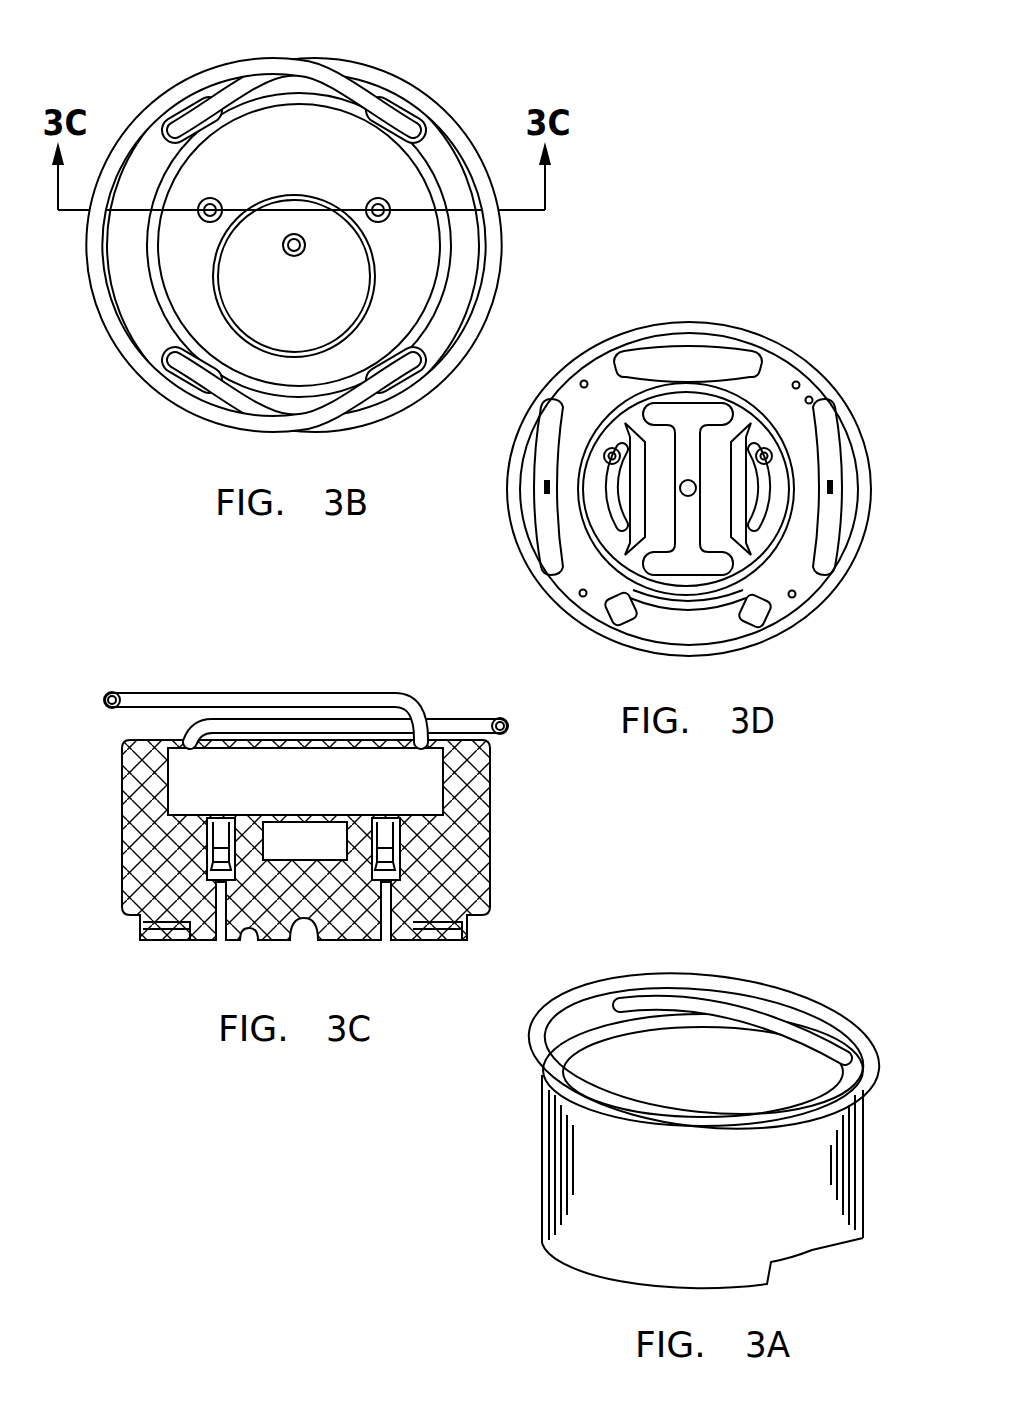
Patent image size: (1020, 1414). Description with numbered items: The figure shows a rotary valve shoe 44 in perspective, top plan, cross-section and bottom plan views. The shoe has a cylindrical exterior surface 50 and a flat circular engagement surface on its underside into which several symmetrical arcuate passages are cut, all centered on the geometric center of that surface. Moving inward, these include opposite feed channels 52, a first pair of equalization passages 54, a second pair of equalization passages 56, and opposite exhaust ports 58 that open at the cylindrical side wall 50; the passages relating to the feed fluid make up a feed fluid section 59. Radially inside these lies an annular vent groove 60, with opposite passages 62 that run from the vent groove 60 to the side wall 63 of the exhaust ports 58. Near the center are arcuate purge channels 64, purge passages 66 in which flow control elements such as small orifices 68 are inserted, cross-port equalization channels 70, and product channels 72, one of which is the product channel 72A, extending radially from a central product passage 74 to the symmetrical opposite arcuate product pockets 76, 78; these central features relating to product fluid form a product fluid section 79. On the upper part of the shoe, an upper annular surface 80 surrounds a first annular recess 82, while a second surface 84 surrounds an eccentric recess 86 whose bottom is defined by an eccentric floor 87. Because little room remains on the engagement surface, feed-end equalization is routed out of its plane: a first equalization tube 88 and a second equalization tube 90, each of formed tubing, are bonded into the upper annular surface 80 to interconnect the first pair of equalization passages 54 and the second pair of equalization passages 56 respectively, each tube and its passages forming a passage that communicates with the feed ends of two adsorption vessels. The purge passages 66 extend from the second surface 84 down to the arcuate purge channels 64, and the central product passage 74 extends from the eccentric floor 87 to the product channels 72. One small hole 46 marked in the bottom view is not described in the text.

In FIG. 3B, the rotary valve shoe 44 is at (138, 84).
In FIG. 3D, the rotary valve shoe 44 is at (823, 300).
In FIG. 3C, the rotary valve shoe 44 is at (186, 666).
In FIG. 3A, the rotary valve shoe 44 is at (800, 957).
In FIG. 3D, the vent hole 46 is at (813, 398).
In FIG. 3D, the cylindrical exterior surface 50 is at (672, 330).
In FIG. 3C, the cylindrical exterior surface 50 is at (492, 797).
In FIG. 3A, the cylindrical exterior surface 50 is at (542, 1160).
In FIG. 3D, the feed channels 52 is at (690, 336).
In FIG. 3D, the first pair of equalization passages 54 is at (799, 382).
In FIG. 3D, the second pair of equalization passages 56 is at (582, 381).
In FIG. 3D, the exhaust ports 58 is at (527, 512).
In FIG. 3C, the exhaust ports 58 is at (480, 921).
In FIG. 3A, the exhaust ports 58 is at (805, 1262).
In FIG. 3D, the feed fluid section 59 is at (773, 587).
In FIG. 3D, the annular vent groove 60 is at (552, 540).
In FIG. 3C, the annular vent groove 60 is at (416, 943).
In FIG. 3D, the passages 62 is at (578, 490).
In FIG. 3C, the passages 62 is at (432, 938).
In FIG. 3D, the side wall 63 is at (545, 482).
In FIG. 3C, the side wall 63 is at (457, 929).
In FIG. 3D, the arcuate purge channels 64 is at (832, 510).
In FIG. 3C, the arcuate purge channels 64 is at (215, 933).
In FIG. 3B, the purge passages 66 is at (220, 205).
In FIG. 3C, the purge passages 66 is at (392, 838).
In FIG. 3B, the small orifices 68 is at (210, 198).
In FIG. 3D, the small orifices 68 is at (772, 457).
In FIG. 3C, the small orifices 68 is at (383, 818).
In FIG. 3D, the cross-port equalization channels 70 is at (627, 598).
In FIG. 3C, the cross-port equalization channels 70 is at (252, 933).
In FIG. 3D, the product channels 72 is at (706, 549).
In FIG. 3D, the product channel 72A is at (700, 437).
In FIG. 3C, the product channel 72A is at (304, 935).
In FIG. 3B, the central product passage 74 is at (284, 249).
In FIG. 3D, the central product passage 74 is at (681, 487).
In FIG. 3D, the arcuate product channel 76 is at (713, 400).
In FIG. 3D, the arcuate product channel 78 is at (733, 600).
In FIG. 3D, the product fluid section 79 is at (702, 490).
In FIG. 3B, the upper annular surface 80 is at (114, 267).
In FIG. 3A, the upper annular surface 80 is at (645, 1018).
In FIG. 3B, the first annular recess 82 is at (165, 300).
In FIG. 3C, the first annular recess 82 is at (291, 790).
In FIG. 3A, the first annular recess 82 is at (711, 1070).
In FIG. 3B, the second surface 84 is at (289, 148).
In FIG. 3B, the eccentric recess 86 is at (220, 363).
In FIG. 3C, the eccentric recess 86 is at (291, 853).
In FIG. 3B, the eccentric floor 87 is at (299, 310).
In FIG. 3B, the first equalization tube 88 is at (420, 395).
In FIG. 3C, the first equalization tube 88 is at (507, 720).
In FIG. 3A, the first equalization tube 88 is at (864, 1036).
In FIG. 3B, the second equalization tube 90 is at (90, 312).
In FIG. 3C, the second equalization tube 90 is at (105, 696).
In FIG. 3A, the second equalization tube 90 is at (575, 986).